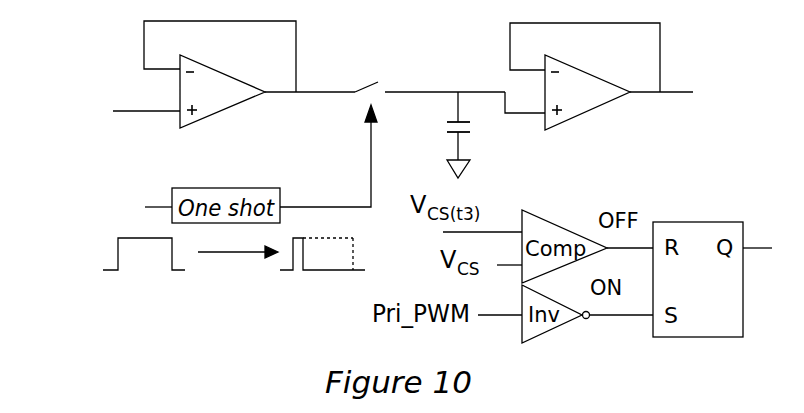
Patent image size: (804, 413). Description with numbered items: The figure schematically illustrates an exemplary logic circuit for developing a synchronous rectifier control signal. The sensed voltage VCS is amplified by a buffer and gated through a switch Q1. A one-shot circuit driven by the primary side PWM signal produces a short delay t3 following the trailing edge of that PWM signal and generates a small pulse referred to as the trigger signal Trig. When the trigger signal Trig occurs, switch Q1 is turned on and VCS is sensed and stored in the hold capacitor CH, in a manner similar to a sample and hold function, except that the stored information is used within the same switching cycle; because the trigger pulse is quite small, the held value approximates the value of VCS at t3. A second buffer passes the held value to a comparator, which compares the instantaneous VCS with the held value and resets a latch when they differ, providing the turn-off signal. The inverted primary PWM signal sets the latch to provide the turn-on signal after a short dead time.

The switch Q1 is at (430, 69).
The hold capacitor CH is at (439, 135).
The short delay t3 is at (238, 270).
The trigger signal Trig is at (328, 156).
The current sense voltage VCS is at (121, 106).